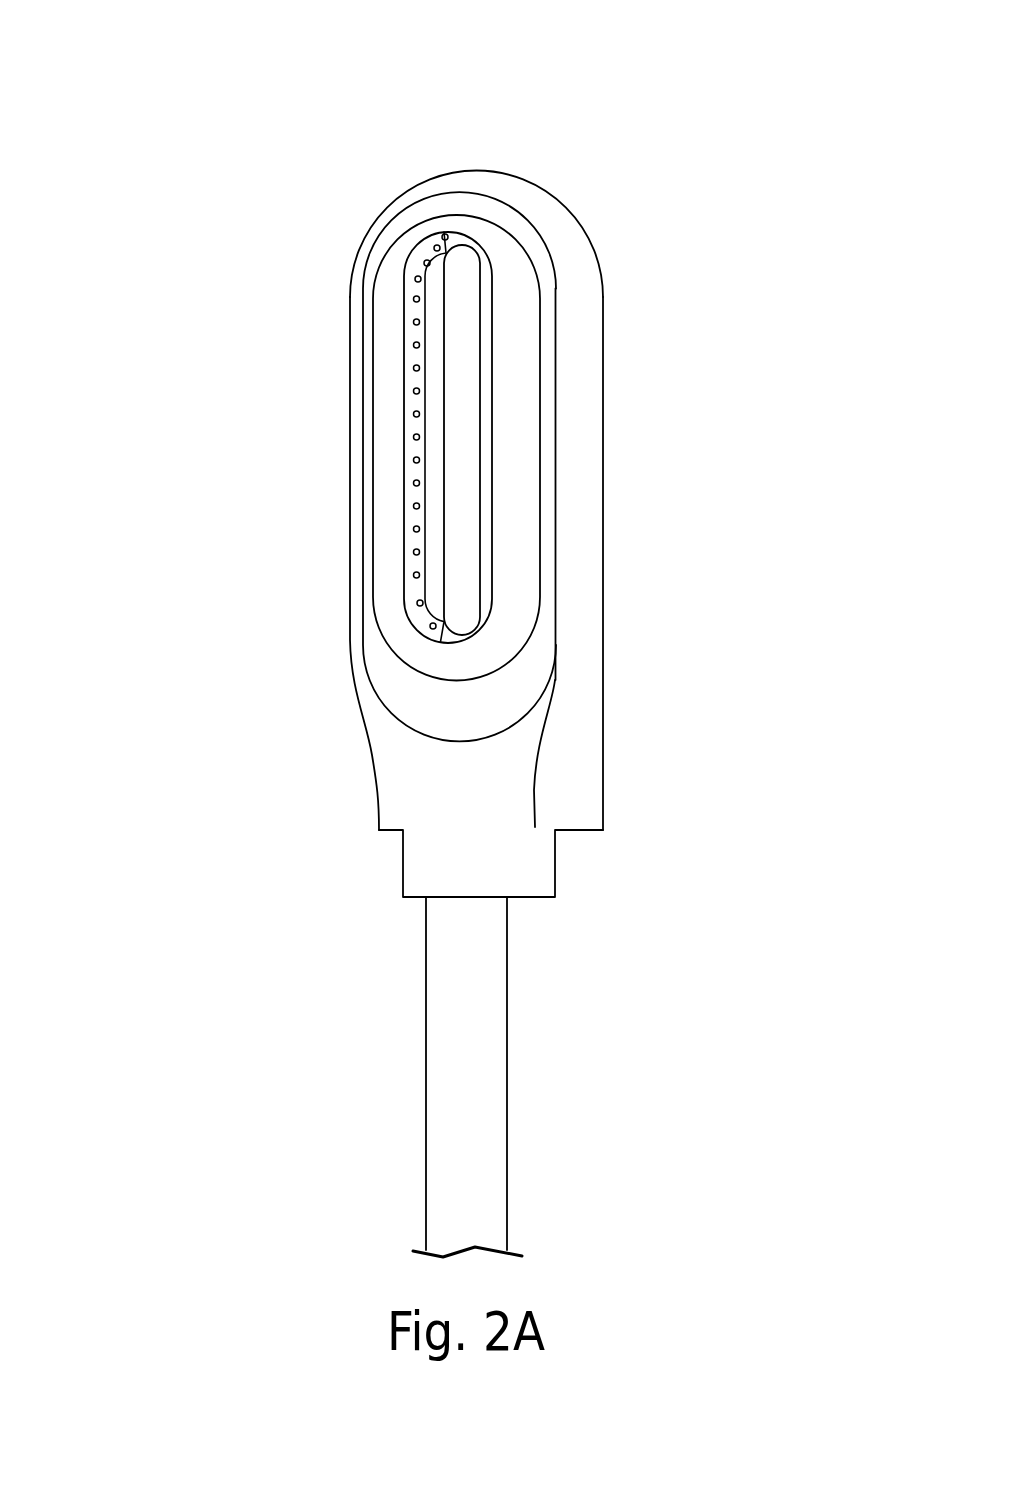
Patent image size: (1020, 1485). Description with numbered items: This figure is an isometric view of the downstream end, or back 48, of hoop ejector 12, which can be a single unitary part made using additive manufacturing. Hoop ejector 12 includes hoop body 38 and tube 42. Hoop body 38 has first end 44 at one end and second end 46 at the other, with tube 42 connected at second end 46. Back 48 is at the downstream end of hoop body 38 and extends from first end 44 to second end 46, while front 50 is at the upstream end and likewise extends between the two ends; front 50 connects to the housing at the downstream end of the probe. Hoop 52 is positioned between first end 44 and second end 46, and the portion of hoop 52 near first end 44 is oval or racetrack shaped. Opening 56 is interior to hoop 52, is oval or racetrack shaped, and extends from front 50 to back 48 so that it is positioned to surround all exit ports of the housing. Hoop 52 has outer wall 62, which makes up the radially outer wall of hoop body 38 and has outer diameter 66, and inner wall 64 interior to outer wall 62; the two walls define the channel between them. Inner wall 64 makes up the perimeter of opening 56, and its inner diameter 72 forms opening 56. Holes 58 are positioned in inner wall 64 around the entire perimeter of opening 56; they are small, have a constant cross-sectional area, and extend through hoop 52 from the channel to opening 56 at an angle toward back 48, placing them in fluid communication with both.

The hoop ejector 12 is at (207, 125).
The hoop body 38 is at (628, 528).
The tube 42 is at (453, 1022).
The first end 44 is at (474, 170).
The second end 46 is at (575, 833).
The back 48 is at (367, 454).
The front 50 is at (605, 698).
The hoop 52 is at (415, 188).
The opening 56 is at (457, 580).
The holes 58 is at (415, 573).
The outer wall 62 is at (575, 248).
The inner wall 64 is at (437, 278).
The outer diameter 66 is at (552, 212).
The inner diameter 72 is at (413, 380).